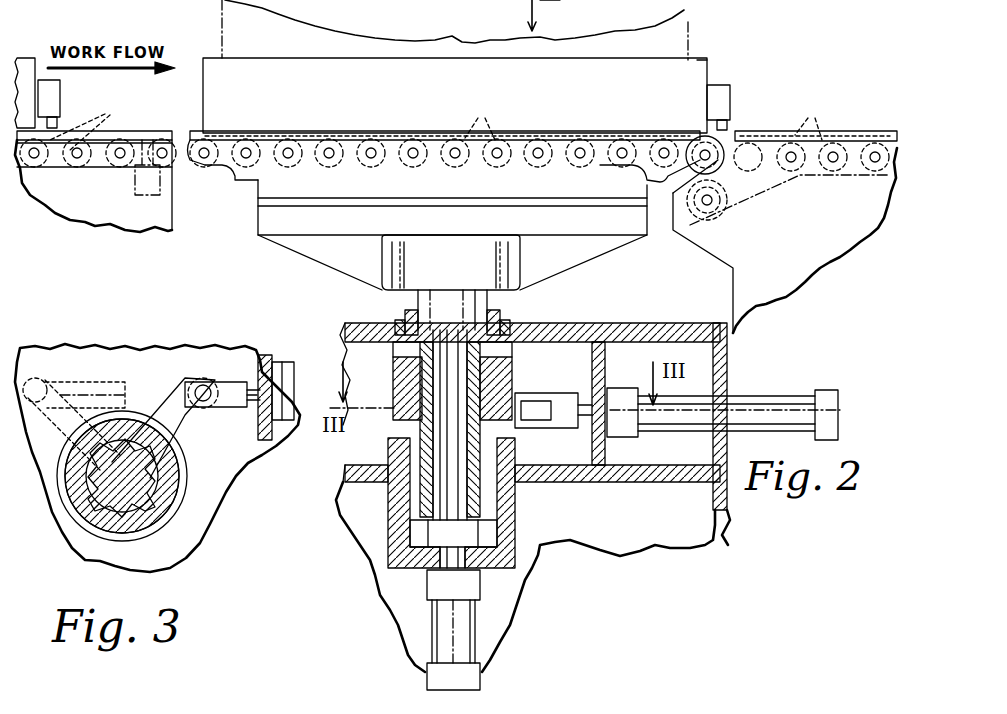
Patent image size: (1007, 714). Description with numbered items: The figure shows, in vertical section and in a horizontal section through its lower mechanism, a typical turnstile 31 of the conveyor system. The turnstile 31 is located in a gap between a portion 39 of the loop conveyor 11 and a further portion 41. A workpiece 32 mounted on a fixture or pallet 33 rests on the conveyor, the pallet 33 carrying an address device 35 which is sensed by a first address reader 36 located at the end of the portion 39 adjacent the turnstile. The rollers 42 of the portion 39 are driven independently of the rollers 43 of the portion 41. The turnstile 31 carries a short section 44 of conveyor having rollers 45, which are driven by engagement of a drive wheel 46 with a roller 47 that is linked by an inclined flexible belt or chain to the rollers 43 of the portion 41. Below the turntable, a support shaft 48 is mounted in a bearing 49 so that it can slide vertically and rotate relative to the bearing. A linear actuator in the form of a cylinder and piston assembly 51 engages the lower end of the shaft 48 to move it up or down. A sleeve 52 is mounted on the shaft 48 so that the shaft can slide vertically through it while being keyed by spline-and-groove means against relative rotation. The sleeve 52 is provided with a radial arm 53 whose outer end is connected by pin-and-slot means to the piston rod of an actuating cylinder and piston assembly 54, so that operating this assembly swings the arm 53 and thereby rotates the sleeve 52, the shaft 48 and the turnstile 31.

In FIG. 2, the loop conveyor 11 is at (98, 224).
In FIG. 2, the turnstile 31 is at (312, 248).
In FIG. 2, the workpiece 32 is at (689, 28).
In FIG. 2, the pallet 33 is at (27, 58).
In FIG. 2, the address device 35 is at (60, 95).
In FIG. 2, the first address reader 36 is at (165, 180).
In FIG. 2, the portion of the loop conveyor 39 is at (175, 222).
In FIG. 2, the portion of the loop conveyor 41 is at (700, 243).
In FIG. 2, the rollers 42 is at (96, 131).
In FIG. 2, the rollers 43 is at (815, 134).
In FIG. 2, the short section of conveyor 44 is at (200, 130).
In FIG. 2, the rollers 45 is at (445, 140).
In FIG. 2, the drive wheel 46 is at (700, 142).
In FIG. 2, the roller 47 is at (712, 224).
In FIG. 2, the support shaft 48 is at (395, 300).
In FIG. 3, the support shaft 48 is at (152, 522).
In FIG. 2, the bearing 49 is at (512, 530).
In FIG. 2, the cylinder and piston assembly 51 is at (430, 612).
In FIG. 2, the sleeve 52 is at (505, 380).
In FIG. 3, the sleeve 52 is at (176, 486).
In FIG. 2, the radial arm 53 is at (546, 414).
In FIG. 3, the radial arm 53 is at (199, 416).
In FIG. 2, the actuating cylinder and piston assembly 54 is at (765, 396).
In FIG. 3, the actuating cylinder and piston assembly 54 is at (292, 378).